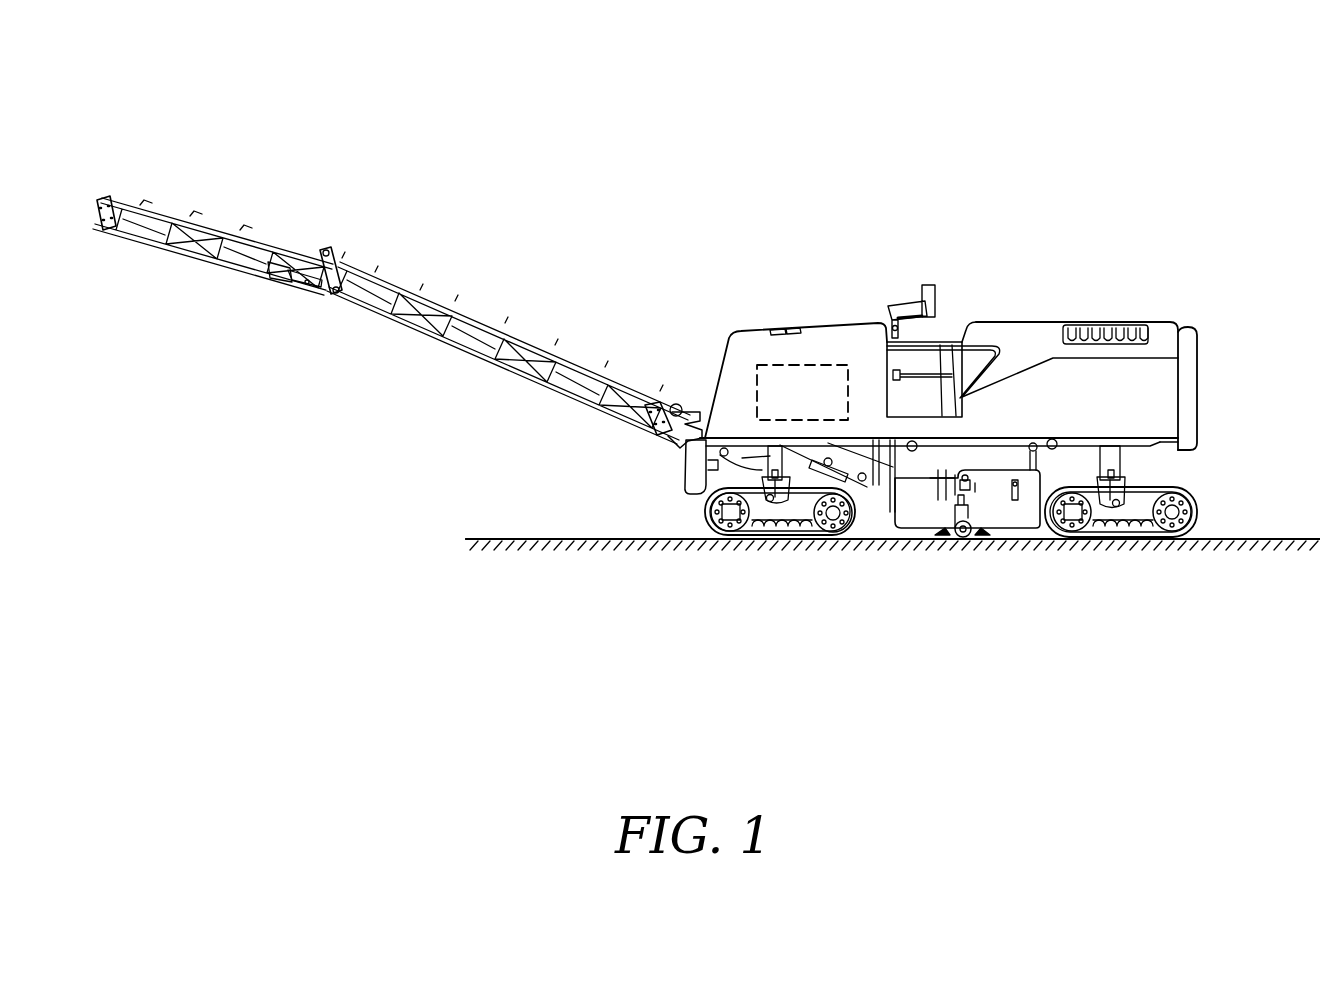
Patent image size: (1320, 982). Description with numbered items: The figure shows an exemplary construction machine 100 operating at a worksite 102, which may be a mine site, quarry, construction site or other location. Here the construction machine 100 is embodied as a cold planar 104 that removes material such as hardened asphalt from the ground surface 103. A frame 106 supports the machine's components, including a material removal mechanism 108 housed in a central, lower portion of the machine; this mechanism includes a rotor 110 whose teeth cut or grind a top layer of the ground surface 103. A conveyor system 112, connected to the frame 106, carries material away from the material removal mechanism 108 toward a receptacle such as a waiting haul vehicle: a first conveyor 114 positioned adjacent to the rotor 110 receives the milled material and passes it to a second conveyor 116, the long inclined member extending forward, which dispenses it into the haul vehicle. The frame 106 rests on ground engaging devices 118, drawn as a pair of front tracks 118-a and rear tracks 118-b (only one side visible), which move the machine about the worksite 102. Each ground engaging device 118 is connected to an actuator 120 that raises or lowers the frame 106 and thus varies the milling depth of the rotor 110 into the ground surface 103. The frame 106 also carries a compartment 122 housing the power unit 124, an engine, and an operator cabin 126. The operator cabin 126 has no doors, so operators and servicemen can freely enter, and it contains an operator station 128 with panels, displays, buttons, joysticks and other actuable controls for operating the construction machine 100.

The construction machine 100 is at (1232, 156).
The worksite 102 is at (480, 537).
The ground surface 103 is at (513, 538).
The cold planar 104 is at (1166, 312).
The frame 106 is at (862, 321).
The material removal mechanism 108 is at (932, 532).
The rotor 110 is at (967, 540).
The conveyor system 112 is at (955, 130).
The first conveyor 114 is at (857, 540).
The second conveyor 116 is at (392, 279).
The ground engaging devices 118 is at (707, 510).
The front tracks 118-a is at (723, 540).
The rear tracks 118-b is at (1050, 540).
The actuator 120 is at (768, 458).
The compartment 122 is at (735, 335).
The power unit 124 is at (821, 405).
The operator cabin 126 is at (959, 321).
The operator station 128 is at (900, 302).